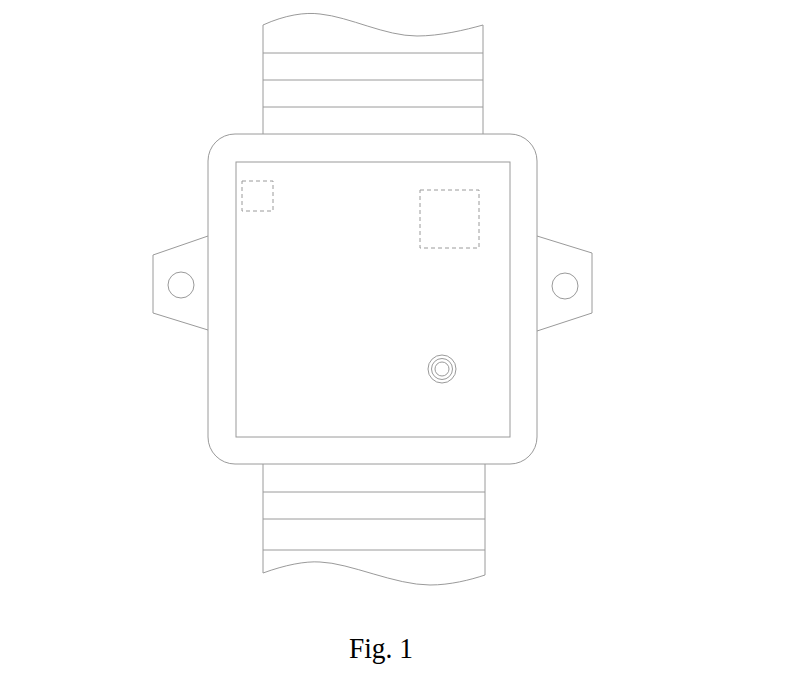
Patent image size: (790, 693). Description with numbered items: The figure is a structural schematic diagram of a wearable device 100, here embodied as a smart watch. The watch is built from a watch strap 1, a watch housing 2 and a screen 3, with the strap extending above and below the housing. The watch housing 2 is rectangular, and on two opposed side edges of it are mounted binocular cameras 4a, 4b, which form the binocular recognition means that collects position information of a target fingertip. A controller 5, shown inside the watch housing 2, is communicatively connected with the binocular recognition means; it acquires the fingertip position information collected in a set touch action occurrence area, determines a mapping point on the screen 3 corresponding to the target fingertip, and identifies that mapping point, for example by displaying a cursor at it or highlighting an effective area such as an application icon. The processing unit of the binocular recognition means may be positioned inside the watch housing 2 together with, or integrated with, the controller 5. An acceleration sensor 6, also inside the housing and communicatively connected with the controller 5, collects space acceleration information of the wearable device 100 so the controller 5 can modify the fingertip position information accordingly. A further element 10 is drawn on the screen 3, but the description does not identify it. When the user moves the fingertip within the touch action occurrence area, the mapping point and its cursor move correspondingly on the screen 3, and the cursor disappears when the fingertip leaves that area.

The wearable device 100 is at (669, 28).
The watch strap 1 is at (485, 532).
The watch housing 2 is at (537, 192).
The screen 3 is at (258, 388).
The binocular camera 4a is at (181, 285).
The binocular camera 4b is at (565, 286).
The controller 5 is at (451, 204).
The acceleration sensor 6 is at (252, 200).
The button 10 is at (442, 369).